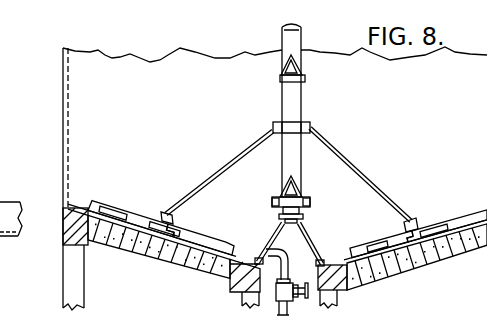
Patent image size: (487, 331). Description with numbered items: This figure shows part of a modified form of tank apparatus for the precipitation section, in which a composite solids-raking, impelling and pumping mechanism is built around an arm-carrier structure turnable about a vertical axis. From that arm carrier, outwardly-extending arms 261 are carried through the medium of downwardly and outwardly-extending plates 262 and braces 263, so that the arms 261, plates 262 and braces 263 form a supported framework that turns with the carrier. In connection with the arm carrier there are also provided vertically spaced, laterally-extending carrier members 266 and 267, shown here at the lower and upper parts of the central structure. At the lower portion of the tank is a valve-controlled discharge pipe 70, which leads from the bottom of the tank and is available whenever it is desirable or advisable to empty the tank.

The carrier member 267 is at (290, 60).
The carrier member 266 is at (283, 185).
The brace 263 is at (356, 170).
The plate 262 is at (240, 223).
The arm 261 is at (445, 215).
The valve-controlled discharge pipe 70 is at (289, 298).